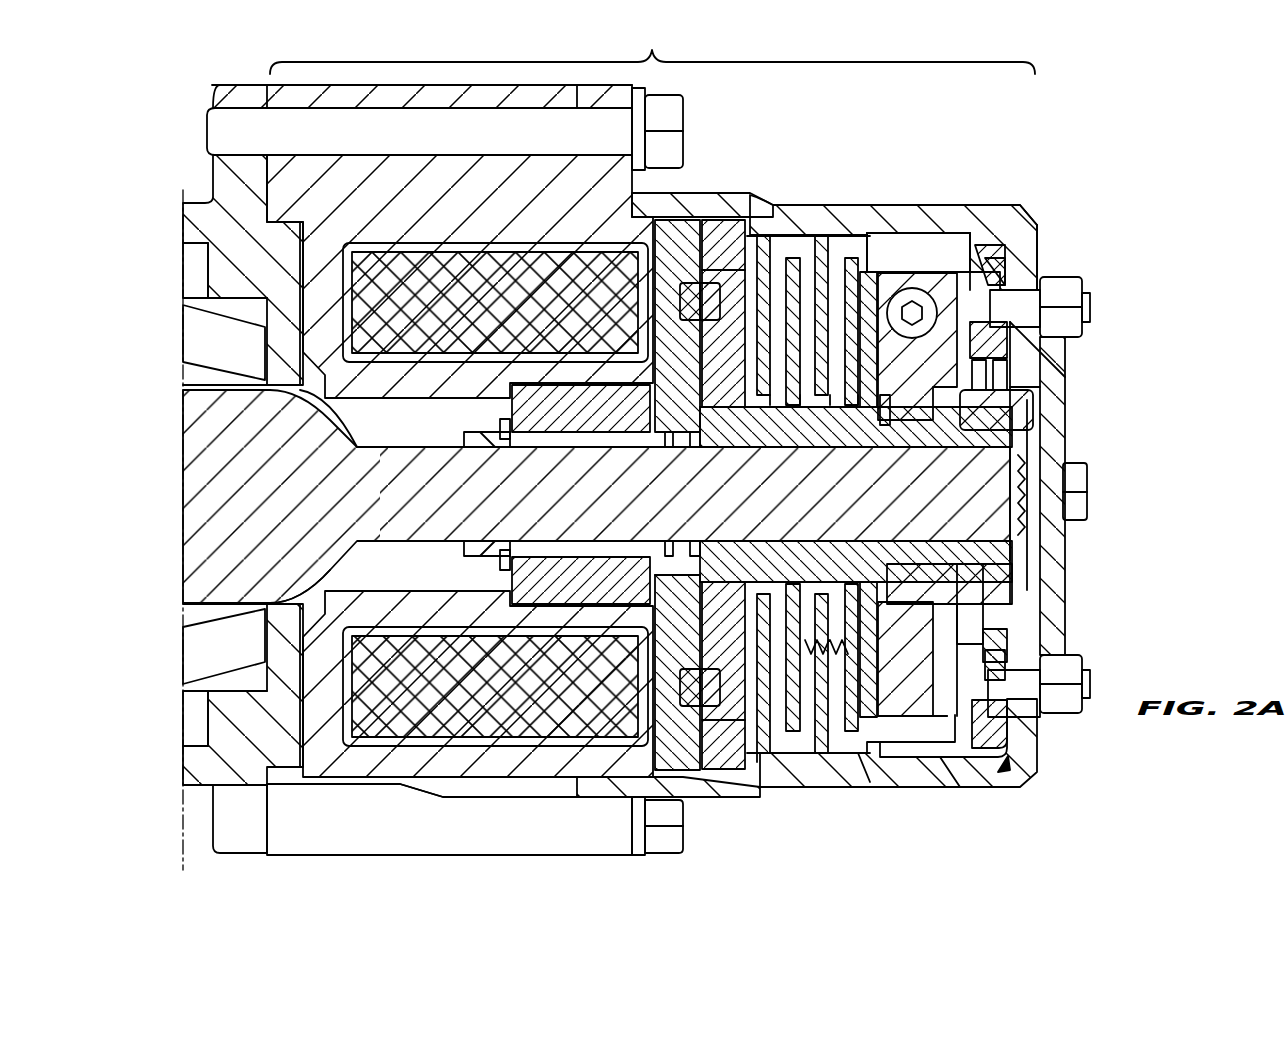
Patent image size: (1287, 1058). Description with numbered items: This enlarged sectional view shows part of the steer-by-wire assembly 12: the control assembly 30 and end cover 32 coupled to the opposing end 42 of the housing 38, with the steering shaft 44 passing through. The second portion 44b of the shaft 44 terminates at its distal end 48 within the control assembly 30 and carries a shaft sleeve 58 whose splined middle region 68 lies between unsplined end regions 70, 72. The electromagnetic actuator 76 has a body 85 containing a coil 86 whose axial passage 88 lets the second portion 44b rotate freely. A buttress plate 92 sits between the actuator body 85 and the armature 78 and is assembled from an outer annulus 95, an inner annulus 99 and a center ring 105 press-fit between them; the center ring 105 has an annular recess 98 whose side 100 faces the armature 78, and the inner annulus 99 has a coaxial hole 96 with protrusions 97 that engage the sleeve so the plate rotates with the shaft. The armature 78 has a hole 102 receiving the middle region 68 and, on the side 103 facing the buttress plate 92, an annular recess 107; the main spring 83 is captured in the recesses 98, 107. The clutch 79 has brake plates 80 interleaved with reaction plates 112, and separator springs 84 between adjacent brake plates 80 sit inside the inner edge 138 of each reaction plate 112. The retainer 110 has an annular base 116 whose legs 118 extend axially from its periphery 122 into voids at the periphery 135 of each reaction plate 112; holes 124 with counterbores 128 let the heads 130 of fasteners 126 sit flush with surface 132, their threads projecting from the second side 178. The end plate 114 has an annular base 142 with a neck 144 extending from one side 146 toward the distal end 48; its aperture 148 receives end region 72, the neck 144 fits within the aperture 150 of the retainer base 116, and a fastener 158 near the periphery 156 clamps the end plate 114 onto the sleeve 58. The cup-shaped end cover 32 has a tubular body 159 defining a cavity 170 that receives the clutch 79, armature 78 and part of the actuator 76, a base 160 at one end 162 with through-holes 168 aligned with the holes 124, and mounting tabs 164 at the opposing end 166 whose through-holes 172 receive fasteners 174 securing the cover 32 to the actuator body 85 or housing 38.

The steer-by-wire assembly 12 is at (420, 38).
The control assembly 30 is at (652, 51).
The end cover 32 is at (1045, 212).
The housing 38 is at (222, 182).
The opposing end 42 is at (252, 85).
The steering shaft 44 is at (208, 578).
The second portion 44b is at (340, 552).
The distal end 48 is at (1015, 525).
The shaft sleeve 58 is at (1025, 585).
The middle region 68 is at (895, 412).
The end region 70 is at (508, 425).
The end region 72 is at (1030, 432).
The electromagnetic actuator 76 is at (487, 797).
The armature 78 is at (730, 215).
The clutch 79 is at (870, 232).
The brake plate 80 is at (855, 752).
The main spring 83 is at (668, 352).
The separator spring 84 is at (855, 402).
The actuator body 85 is at (400, 784).
The coil 86 is at (338, 690).
The axial passage 88 is at (398, 400).
The buttress plate 92 is at (690, 800).
The outer annulus 95 is at (650, 240).
The coaxial hole 96 is at (670, 450).
The protrusions 97 is at (698, 452).
The annular recess 98 is at (710, 325).
The inner annulus 99 is at (650, 402).
The side 100 is at (677, 665).
The hole 102 is at (715, 417).
The side 103 is at (722, 621).
The center ring 105 is at (685, 300).
The annular recess 107 is at (723, 484).
The retainer 110 is at (1015, 215).
The reaction plate 112 is at (795, 245).
The end plate 114 is at (925, 225).
The annular base 116 is at (1008, 760).
The legs 118 is at (900, 232).
The periphery 122 is at (975, 225).
The holes 124 is at (985, 298).
The fasteners 126 is at (1003, 770).
The counterbores 128 is at (1015, 245).
The heads 130 is at (975, 683).
The surface 132 is at (960, 635).
The periphery 135 is at (773, 750).
The inner edge 138 is at (835, 642).
The annular base 142 is at (912, 620).
The neck 144 is at (975, 575).
The side 146 is at (975, 565).
The aperture 148 is at (1008, 404).
The aperture 150 is at (1030, 398).
The periphery 156 is at (912, 701).
The fastener 158 is at (890, 318).
The tubular body 159 is at (950, 787).
The base 160 is at (1042, 272).
The end 162 is at (1035, 210).
The mounting tabs 164 is at (615, 90).
The opposing end 166 is at (688, 202).
The through-holes 168 is at (1058, 738).
The cavity 170 is at (865, 782).
The through-holes 172 is at (612, 113).
The fasteners 174 is at (412, 140).
The second side 178 is at (1010, 735).